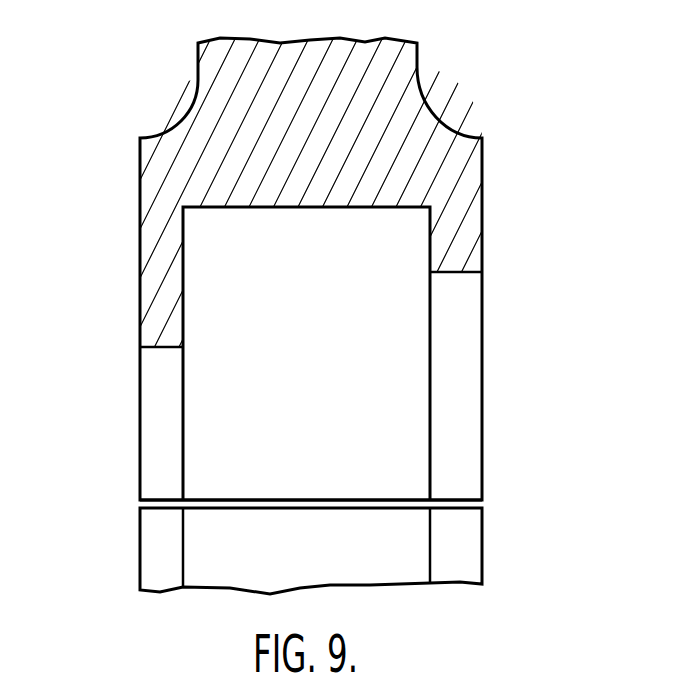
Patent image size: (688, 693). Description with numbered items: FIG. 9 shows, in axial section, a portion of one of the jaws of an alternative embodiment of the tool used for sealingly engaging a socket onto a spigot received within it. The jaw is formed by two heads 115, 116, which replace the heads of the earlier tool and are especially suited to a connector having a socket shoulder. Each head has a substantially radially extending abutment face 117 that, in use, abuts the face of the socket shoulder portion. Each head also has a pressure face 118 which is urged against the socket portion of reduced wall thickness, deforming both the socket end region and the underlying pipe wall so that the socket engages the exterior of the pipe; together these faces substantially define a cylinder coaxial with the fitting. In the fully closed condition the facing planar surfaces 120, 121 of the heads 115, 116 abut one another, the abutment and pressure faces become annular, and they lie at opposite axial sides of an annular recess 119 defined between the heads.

The head 115 is at (161, 105).
The head 116 is at (490, 570).
The abutment face 117 is at (430, 254).
The pressure face 118 is at (165, 349).
The annular recess 119 is at (320, 268).
The planar surface 120 is at (142, 500).
The planar surface 121 is at (468, 505).